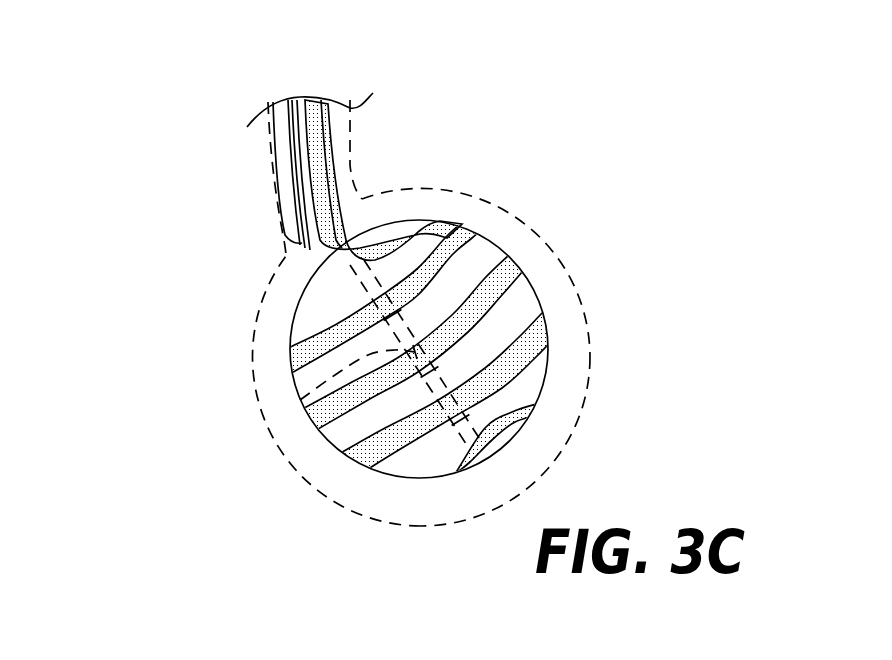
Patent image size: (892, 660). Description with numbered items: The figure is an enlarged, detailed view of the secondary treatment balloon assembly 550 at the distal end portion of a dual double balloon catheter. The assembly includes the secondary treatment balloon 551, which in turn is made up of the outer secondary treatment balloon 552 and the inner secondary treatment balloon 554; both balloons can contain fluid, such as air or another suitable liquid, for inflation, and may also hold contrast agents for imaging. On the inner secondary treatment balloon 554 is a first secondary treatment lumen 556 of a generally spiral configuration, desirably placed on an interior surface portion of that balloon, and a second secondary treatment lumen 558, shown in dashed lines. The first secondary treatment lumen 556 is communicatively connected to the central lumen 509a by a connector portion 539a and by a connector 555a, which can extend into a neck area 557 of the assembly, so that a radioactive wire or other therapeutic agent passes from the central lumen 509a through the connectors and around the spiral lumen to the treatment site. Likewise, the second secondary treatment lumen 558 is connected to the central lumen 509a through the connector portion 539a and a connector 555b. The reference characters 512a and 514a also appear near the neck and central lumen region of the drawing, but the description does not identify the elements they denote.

The central lumen 509a is at (312, 142).
The outer wall of cuff 514a is at (273, 105).
The neck area 557 is at (259, 169).
The inner lumen 512a is at (298, 221).
The connector 555b is at (336, 270).
The inner secondary treatment balloon 554 is at (291, 336).
The second secondary treatment lumen 558 is at (271, 428).
The connector portion 539a is at (340, 167).
The connector 555a is at (354, 243).
The first secondary treatment lumen 556 is at (455, 249).
The secondary treatment balloon assembly 550 is at (614, 170).
The outer secondary treatment balloon 552 is at (564, 256).
The secondary treatment balloon 551 is at (640, 362).